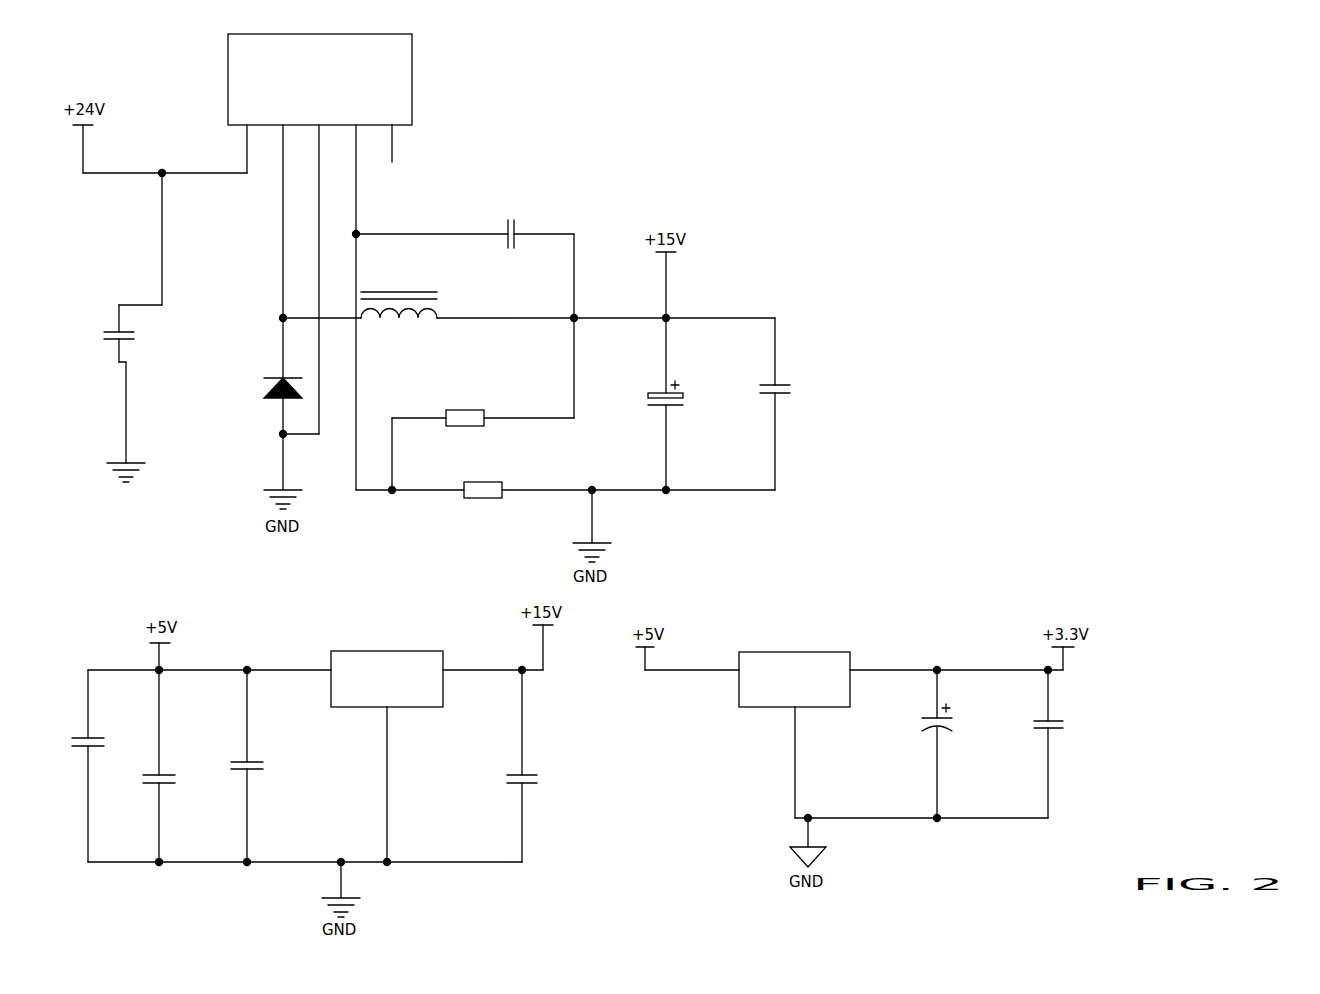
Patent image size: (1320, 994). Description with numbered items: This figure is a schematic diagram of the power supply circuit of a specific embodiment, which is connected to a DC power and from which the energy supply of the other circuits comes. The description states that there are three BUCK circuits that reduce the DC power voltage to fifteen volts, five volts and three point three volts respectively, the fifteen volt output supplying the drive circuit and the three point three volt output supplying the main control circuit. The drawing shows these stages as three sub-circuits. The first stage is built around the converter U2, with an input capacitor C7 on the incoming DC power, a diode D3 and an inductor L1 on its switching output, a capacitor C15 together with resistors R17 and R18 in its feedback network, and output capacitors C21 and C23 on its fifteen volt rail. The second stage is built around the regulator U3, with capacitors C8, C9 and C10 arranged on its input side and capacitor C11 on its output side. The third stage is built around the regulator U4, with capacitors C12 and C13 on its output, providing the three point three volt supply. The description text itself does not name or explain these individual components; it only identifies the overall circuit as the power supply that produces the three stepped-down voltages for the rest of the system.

The XL7015 buck converter IC U2 is at (316, 86).
The 0.1µF input capacitor C7 is at (110, 410).
The Schottky diode D3 is at (265, 390).
The 18µH inductor L1 is at (399, 312).
The 33nF feedback capacitor C15 is at (513, 239).
The 30K feedback resistor R17 is at (465, 417).
The 2K7 feedback resistor R18 is at (483, 492).
The 22µF output capacitor C21 is at (686, 403).
The 0.1µF output capacitor C23 is at (793, 406).
The 78L05 voltage regulator U3 is at (386, 746).
The 0.1µF capacitor C8 is at (105, 766).
The 0.1µF capacitor C9 is at (176, 766).
The 10µF capacitor C10 is at (264, 766).
The 0.1µF capacitor C11 is at (540, 766).
The AMS1117-3.3 voltage regulator U4 is at (799, 723).
The 0.1µF capacitor C12 is at (957, 744).
The 0.1µF capacitor C13 is at (1069, 744).